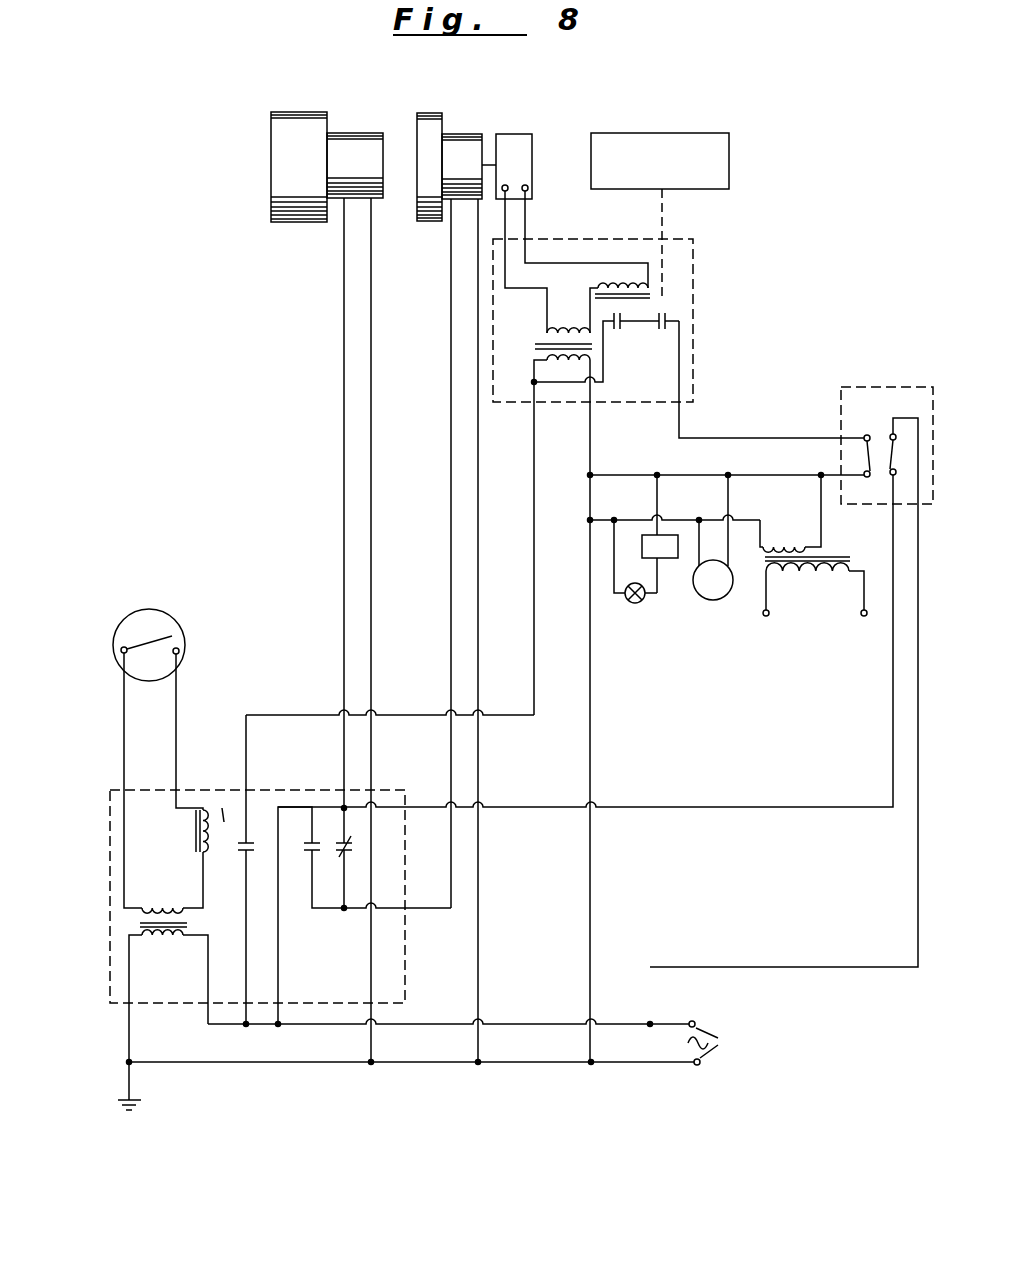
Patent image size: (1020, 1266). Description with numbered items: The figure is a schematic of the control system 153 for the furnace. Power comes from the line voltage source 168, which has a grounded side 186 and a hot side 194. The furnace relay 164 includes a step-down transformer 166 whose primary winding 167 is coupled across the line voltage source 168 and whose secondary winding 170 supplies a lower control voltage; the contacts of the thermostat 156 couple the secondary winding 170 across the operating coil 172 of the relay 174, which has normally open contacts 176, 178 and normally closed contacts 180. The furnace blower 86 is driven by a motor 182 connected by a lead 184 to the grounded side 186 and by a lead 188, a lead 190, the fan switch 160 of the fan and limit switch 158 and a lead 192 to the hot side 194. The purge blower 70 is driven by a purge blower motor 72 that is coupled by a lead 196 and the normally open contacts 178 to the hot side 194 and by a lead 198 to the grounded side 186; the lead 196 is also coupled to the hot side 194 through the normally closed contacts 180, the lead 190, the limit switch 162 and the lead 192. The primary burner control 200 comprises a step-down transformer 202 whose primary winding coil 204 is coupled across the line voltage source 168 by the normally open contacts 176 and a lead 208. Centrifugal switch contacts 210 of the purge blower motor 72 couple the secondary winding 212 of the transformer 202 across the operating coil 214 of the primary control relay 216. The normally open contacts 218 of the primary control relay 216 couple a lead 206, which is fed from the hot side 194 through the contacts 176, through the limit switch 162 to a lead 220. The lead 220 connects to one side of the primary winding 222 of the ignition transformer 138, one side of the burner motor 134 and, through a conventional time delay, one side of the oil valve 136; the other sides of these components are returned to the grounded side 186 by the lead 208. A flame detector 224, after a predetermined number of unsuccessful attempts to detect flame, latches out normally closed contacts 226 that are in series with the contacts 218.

The furnace blower 86 is at (307, 112).
The motor 182 is at (355, 132).
The purge blower 70 is at (426, 112).
The purge blower motor 72 is at (456, 133).
The centrifugal switch contacts 210 is at (512, 133).
The flame detector 224 is at (655, 132).
The primary burner control 200 is at (683, 238).
The step-down transformer 202 is at (535, 344).
The secondary winding 212 is at (563, 343).
The primary winding coil 204 is at (560, 363).
The operating coil 214 is at (608, 285).
The primary control relay 216 is at (652, 297).
The normally open contacts 218 is at (617, 330).
The normally closed contacts 226 is at (662, 330).
The lead 206 is at (535, 472).
The lead 208 is at (592, 443).
The lead 220 is at (745, 474).
The ignition transformer 138 is at (664, 533).
The oil valve 136 is at (622, 590).
The burner motor 134 is at (702, 595).
The primary winding 222 is at (778, 545).
The fan and limit switch 158 is at (840, 406).
The fan switch 160 is at (890, 448).
The limit switch 162 is at (866, 455).
The lead 192 is at (822, 966).
The lead 190 is at (553, 806).
The thermostat 156 is at (168, 631).
The furnace relay 164 is at (110, 958).
The operating coil 172 is at (195, 831).
The relay 174 is at (224, 822).
The secondary winding 170 is at (168, 906).
The step-down transformer 166 is at (140, 923).
The primary winding 167 is at (178, 940).
The normally open contacts 176 is at (250, 840).
The normally open contacts 178 is at (313, 840).
The normally closed contacts 180 is at (345, 854).
The lead 188 is at (343, 440).
The lead 184 is at (372, 440).
The lead 196 is at (450, 478).
The lead 198 is at (479, 478).
The hot side 194 is at (502, 1023).
The grounded side 186 is at (420, 1063).
The line voltage source 168 is at (724, 1043).
The control system 153 is at (547, 1121).